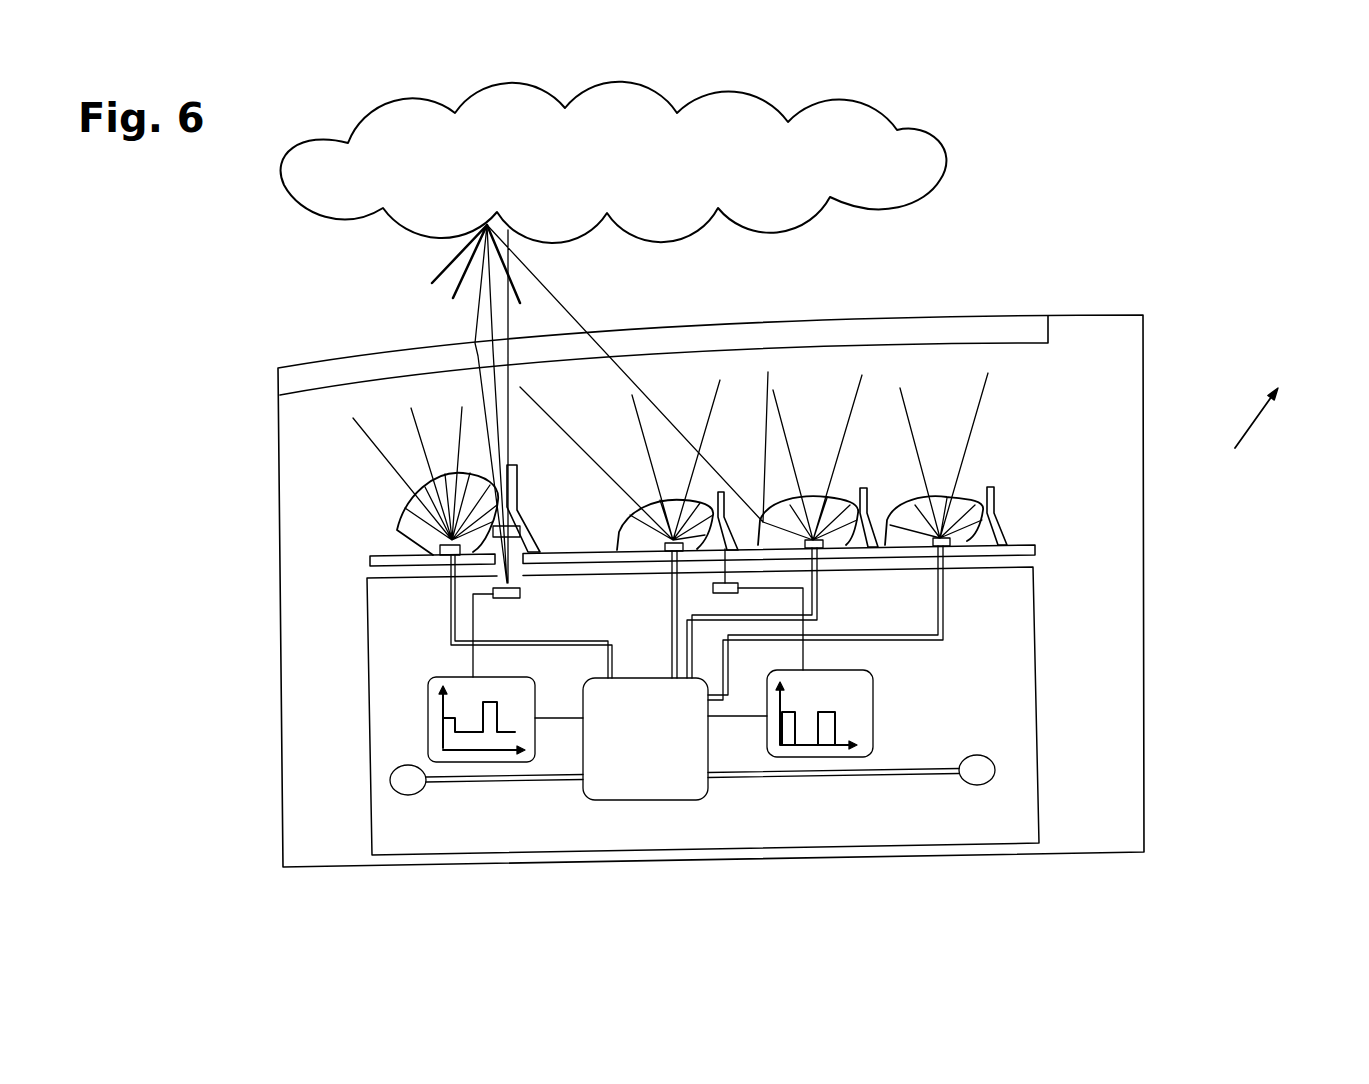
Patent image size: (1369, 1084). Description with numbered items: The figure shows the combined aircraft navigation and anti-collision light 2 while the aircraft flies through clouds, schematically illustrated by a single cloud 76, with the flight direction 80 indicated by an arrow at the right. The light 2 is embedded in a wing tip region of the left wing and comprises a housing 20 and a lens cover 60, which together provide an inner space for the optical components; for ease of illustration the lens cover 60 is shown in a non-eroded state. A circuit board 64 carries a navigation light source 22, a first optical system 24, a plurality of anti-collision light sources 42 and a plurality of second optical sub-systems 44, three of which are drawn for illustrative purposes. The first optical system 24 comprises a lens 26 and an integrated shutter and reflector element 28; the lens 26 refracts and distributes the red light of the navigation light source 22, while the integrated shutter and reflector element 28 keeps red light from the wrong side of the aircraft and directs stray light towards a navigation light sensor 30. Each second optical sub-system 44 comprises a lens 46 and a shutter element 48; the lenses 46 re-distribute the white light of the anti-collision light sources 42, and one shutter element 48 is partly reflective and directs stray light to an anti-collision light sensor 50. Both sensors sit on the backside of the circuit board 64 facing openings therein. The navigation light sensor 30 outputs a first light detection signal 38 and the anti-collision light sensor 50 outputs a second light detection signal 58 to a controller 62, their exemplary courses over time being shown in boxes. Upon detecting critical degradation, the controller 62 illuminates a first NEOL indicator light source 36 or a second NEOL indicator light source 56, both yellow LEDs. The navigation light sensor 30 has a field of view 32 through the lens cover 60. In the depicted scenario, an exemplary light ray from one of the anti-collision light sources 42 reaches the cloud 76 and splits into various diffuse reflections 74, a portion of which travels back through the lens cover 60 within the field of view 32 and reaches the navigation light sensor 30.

The combined aircraft navigation and anti-collision light 2 is at (226, 256).
The housing 20 is at (1145, 638).
The navigation light source 22 is at (437, 557).
The first optical system 24 is at (497, 517).
The lens 26 is at (470, 468).
The integrated shutter and reflector element 28 is at (527, 513).
The navigation light sensor 30 is at (539, 547).
The field of view 32 is at (478, 315).
The first NEOL indicator light source 36 is at (408, 797).
The first light detection signal 38 is at (428, 718).
The anti-collision light sources 42 is at (637, 560).
The second optical sub-systems 44 is at (807, 501).
The lens 46 is at (686, 498).
The shutter element 48 is at (727, 530).
The anti-collision light sensor 50 is at (713, 590).
The second NEOL indicator light source 56 is at (984, 787).
The second light detection signal 58 is at (874, 693).
The lens cover 60 is at (990, 315).
The controller 62 is at (645, 802).
The circuit board 64 is at (1036, 548).
The diffuse reflections 74 is at (440, 262).
The cloud 76 is at (778, 218).
The flight direction 80 is at (1247, 435).